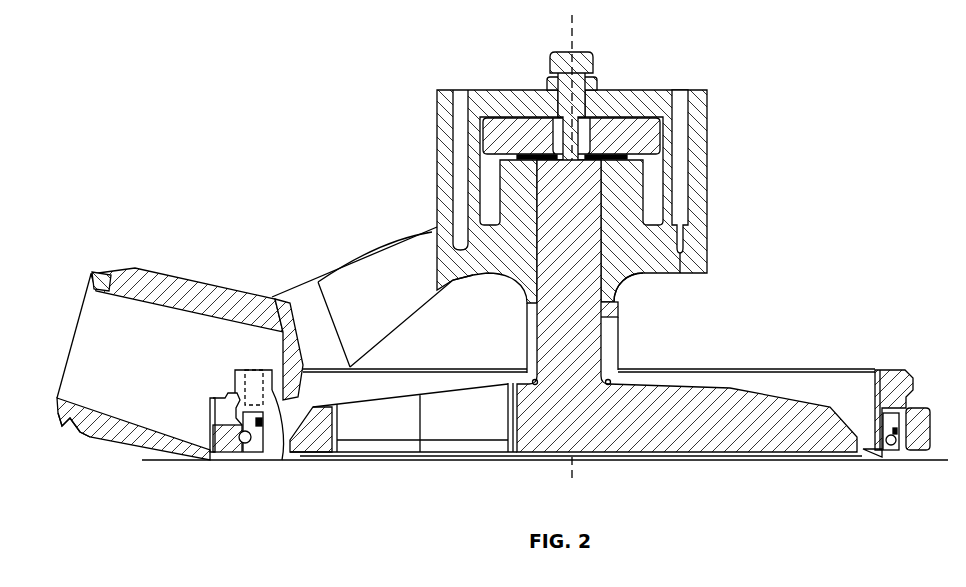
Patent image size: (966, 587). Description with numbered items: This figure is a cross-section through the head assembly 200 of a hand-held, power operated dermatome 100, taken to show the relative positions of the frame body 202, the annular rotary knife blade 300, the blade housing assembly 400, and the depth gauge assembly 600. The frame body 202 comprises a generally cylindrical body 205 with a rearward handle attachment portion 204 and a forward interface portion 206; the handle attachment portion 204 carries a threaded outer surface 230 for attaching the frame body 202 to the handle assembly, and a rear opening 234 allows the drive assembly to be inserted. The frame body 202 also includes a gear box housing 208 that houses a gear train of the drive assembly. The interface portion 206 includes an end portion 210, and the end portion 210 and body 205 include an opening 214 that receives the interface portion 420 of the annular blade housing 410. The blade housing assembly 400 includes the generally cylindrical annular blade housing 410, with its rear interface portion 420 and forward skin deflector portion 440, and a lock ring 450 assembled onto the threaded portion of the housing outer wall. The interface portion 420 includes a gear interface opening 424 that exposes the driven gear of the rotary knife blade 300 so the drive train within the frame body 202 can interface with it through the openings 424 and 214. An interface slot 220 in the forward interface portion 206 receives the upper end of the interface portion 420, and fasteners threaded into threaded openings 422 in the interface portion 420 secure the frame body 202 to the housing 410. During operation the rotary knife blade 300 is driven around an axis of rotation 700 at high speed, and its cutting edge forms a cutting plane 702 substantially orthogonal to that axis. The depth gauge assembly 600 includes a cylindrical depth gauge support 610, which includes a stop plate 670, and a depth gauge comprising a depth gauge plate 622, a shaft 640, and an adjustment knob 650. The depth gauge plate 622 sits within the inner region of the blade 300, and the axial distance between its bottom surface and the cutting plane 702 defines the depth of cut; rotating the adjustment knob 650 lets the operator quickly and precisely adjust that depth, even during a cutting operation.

The dermatome 100 is at (283, 70).
The head assembly 200 is at (278, 132).
The frame body 202 is at (185, 290).
The handle attachment portion 204 is at (112, 258).
The cylindrical body 205 is at (224, 312).
The forward interface portion 206 is at (276, 270).
The gear box housing 208 is at (105, 362).
The end portion 210 is at (297, 380).
The opening 214 is at (213, 386).
The interface slot 220 is at (256, 370).
The threaded outer surface 230 is at (61, 424).
The rear opening 234 is at (88, 297).
The annular rotary knife blade 300 is at (883, 452).
The blade housing assembly 400 is at (619, 373).
The annular blade housing 410 is at (893, 368).
The interface portion 420 is at (314, 476).
The threaded openings 422 is at (228, 390).
The gear interface opening 424 is at (283, 458).
The skin deflector portion 440 is at (826, 476).
The lock ring 450 is at (930, 423).
The depth gauge assembly 600 is at (728, 215).
The depth gauge support 610 is at (707, 262).
The depth gauge plate 622 is at (448, 413).
The shaft 640 is at (585, 285).
The adjustment knob 650 is at (623, 125).
The stop plate 670 is at (707, 145).
The axis of rotation 700 is at (590, 480).
The cutting plane 702 is at (930, 462).